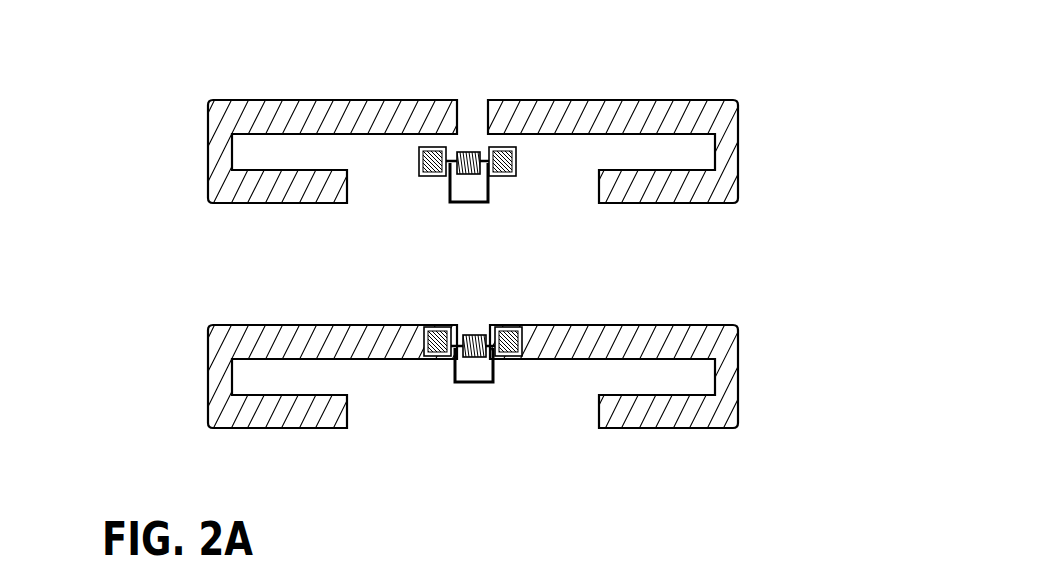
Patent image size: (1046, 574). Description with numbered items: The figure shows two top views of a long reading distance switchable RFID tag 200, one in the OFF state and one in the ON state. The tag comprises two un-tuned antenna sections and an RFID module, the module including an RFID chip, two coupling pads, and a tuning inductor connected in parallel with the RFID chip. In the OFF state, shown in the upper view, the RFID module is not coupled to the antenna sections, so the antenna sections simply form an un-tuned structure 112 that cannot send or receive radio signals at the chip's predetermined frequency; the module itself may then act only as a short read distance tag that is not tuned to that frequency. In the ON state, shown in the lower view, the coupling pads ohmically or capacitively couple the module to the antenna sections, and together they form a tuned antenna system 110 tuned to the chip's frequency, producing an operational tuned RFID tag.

The switchable RFID tag 200 is at (724, 64).
The tuned antenna system 110 is at (190, 362).
The un-tuned structure 112 is at (198, 114).